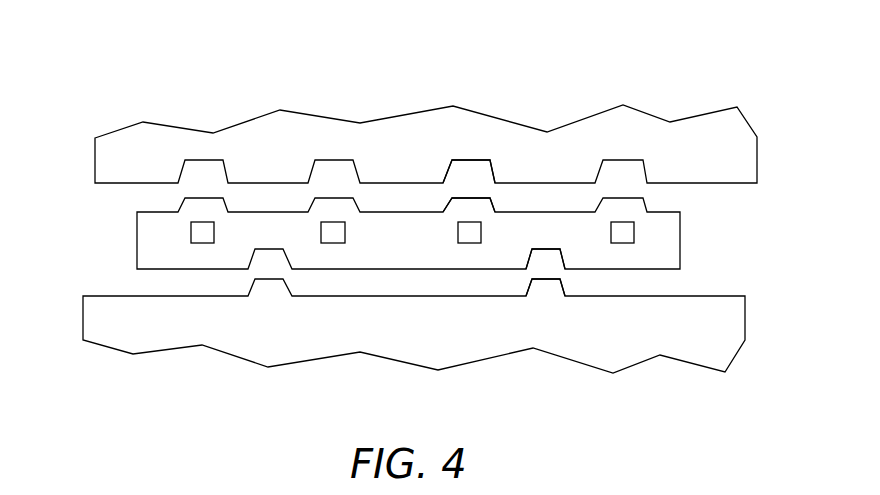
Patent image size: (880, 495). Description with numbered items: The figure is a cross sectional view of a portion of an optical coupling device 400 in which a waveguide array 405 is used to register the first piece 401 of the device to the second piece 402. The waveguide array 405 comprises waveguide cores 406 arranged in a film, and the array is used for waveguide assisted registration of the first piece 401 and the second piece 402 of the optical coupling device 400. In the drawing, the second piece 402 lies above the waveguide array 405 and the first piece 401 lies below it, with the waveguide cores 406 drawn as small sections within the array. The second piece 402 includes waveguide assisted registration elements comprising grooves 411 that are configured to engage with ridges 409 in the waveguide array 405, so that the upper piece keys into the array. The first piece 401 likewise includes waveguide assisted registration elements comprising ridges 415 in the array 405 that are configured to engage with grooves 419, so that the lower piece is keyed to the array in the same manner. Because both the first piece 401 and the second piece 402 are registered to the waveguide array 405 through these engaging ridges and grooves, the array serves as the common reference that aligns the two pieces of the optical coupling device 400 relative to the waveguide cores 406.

The optical coupling device 400 is at (162, 73).
The first piece 401 is at (707, 343).
The second piece 402 is at (731, 130).
The waveguide array 405 is at (605, 258).
The waveguide cores 406 is at (468, 236).
The ridges 409 is at (478, 208).
The grooves 411 is at (472, 172).
The ridges 415 is at (542, 289).
The grooves 419 is at (548, 260).